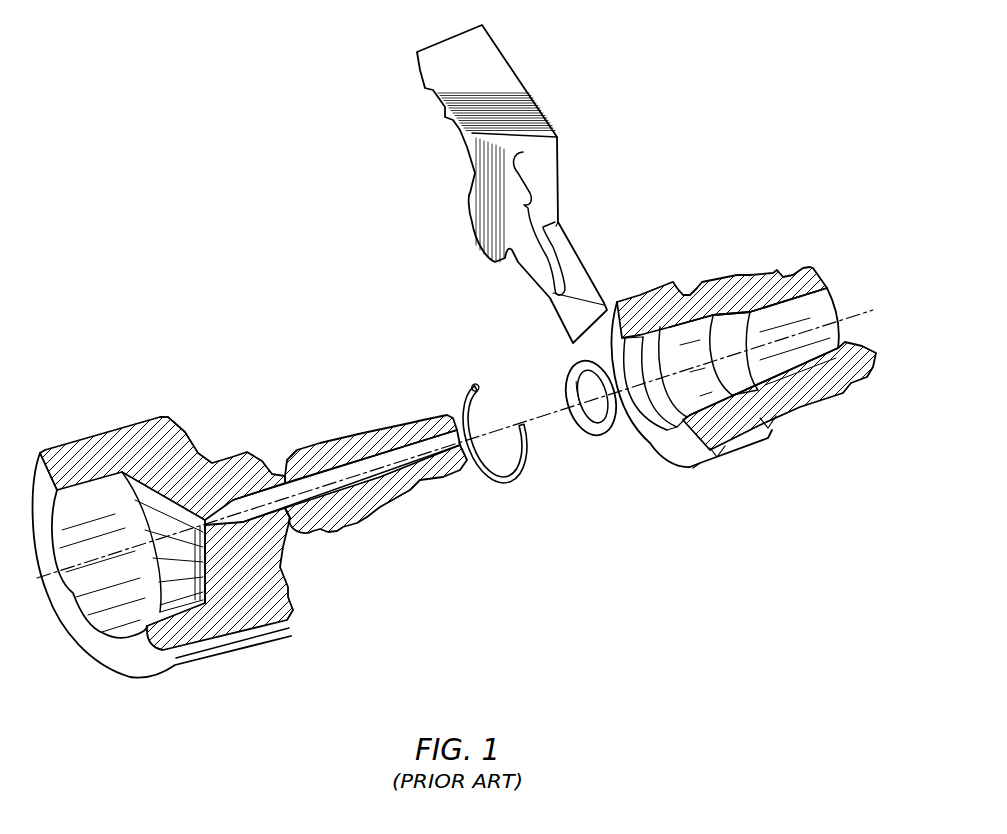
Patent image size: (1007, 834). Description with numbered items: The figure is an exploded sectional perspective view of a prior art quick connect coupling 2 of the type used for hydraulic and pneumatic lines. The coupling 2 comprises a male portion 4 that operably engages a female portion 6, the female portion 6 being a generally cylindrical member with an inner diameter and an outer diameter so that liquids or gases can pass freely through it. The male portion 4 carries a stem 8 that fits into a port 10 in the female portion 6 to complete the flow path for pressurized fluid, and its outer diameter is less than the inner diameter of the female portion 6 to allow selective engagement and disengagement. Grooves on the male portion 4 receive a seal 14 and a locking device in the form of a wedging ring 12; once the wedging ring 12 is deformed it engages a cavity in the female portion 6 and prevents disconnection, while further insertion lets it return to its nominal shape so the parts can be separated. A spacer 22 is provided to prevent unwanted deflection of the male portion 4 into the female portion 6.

The quick connect coupling 2 is at (258, 215).
The male portion 4 is at (133, 364).
The female portion 6 is at (781, 464).
The stem 8 is at (420, 485).
The port 10 is at (813, 300).
The wedging ring 12 is at (526, 463).
The seal 14 is at (577, 363).
The spacer 22 is at (500, 63).